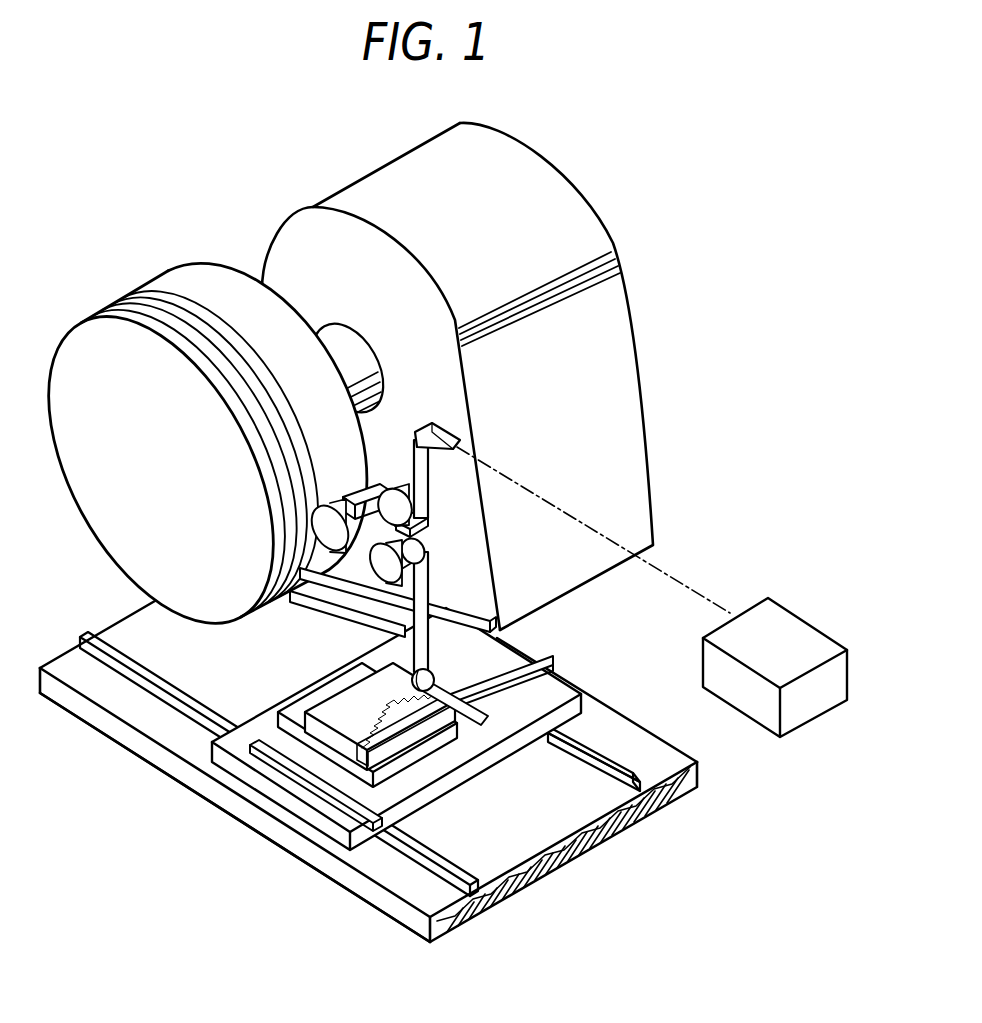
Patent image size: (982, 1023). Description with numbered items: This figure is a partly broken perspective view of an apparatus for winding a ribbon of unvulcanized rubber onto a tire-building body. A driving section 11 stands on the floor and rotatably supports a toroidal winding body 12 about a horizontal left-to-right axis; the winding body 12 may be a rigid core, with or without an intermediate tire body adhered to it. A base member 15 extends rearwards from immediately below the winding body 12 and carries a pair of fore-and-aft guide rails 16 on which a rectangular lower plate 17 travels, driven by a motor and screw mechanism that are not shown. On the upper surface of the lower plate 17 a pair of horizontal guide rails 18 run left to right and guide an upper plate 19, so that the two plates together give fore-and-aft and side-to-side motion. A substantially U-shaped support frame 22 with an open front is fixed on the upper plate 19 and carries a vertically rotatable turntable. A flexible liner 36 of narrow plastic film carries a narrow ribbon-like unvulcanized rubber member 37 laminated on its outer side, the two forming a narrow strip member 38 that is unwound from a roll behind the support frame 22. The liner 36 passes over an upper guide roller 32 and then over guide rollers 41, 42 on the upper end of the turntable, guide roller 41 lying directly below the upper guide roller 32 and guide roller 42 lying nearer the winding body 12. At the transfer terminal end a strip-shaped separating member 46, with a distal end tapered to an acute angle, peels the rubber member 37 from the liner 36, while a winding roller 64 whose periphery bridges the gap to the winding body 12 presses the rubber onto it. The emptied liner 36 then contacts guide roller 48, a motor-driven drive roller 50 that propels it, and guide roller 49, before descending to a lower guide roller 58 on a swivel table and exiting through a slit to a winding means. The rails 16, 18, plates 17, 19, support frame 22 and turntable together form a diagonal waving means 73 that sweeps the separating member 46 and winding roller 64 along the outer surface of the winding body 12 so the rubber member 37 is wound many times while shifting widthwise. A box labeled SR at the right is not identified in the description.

The driving section 11 is at (560, 166).
The toroidal winding body 12 is at (184, 433).
The base member 15 is at (627, 727).
The guide rails 16 is at (592, 765).
The lower plate 17 is at (556, 691).
The horizontal guide rails 18 is at (324, 789).
The upper plate 19 is at (285, 709).
The support frame 22 is at (331, 708).
The upper guide roller 32 is at (432, 461).
The flexible liner 36 is at (447, 621).
The unvulcanized rubber member 37 is at (264, 377).
The narrow strip member 38 is at (445, 432).
The guide roller 41 is at (422, 515).
The guide roller 42 is at (383, 493).
The separating member 46 is at (365, 490).
The guide roller 48 is at (380, 568).
The guide roller 49 is at (420, 549).
The drive roller 50 is at (368, 599).
The lower guide roller 58 is at (436, 679).
The winding roller 64 is at (325, 510).
The diagonal waving means 73 is at (215, 806).
The signal receiver SR is at (790, 641).